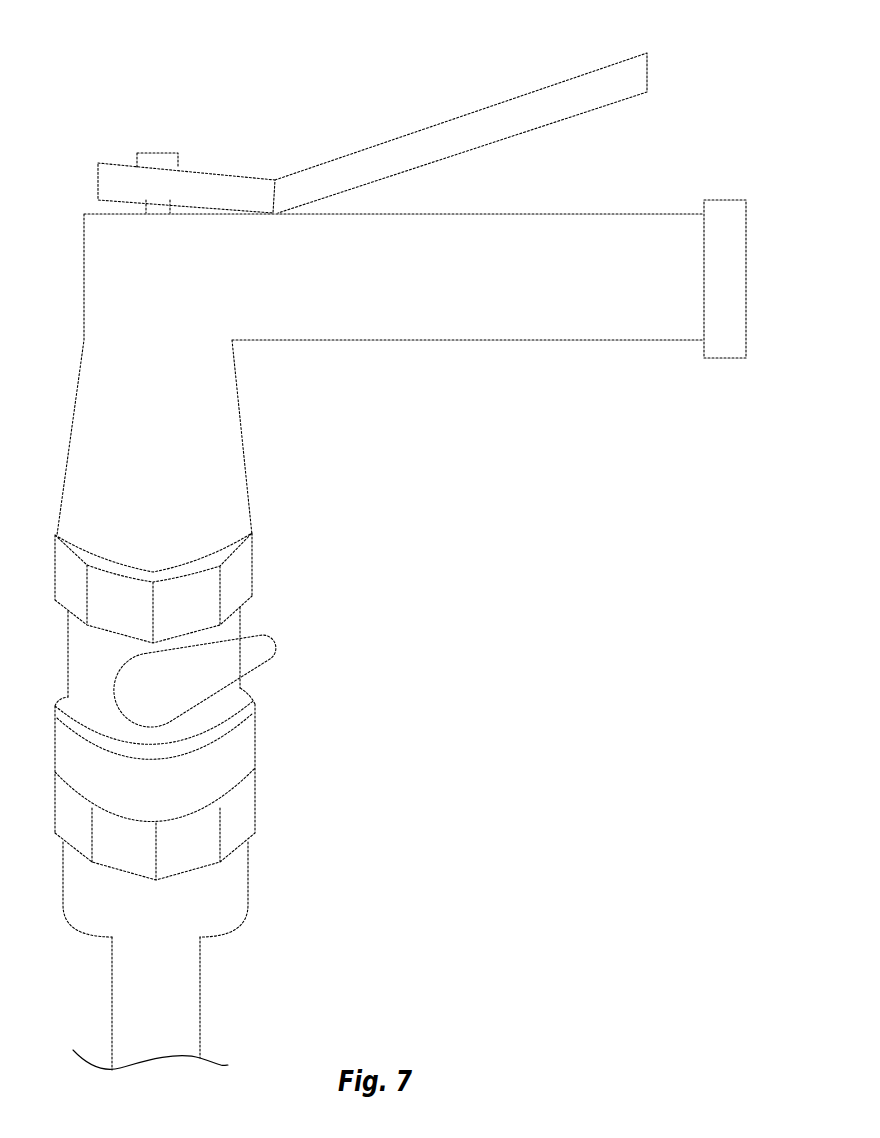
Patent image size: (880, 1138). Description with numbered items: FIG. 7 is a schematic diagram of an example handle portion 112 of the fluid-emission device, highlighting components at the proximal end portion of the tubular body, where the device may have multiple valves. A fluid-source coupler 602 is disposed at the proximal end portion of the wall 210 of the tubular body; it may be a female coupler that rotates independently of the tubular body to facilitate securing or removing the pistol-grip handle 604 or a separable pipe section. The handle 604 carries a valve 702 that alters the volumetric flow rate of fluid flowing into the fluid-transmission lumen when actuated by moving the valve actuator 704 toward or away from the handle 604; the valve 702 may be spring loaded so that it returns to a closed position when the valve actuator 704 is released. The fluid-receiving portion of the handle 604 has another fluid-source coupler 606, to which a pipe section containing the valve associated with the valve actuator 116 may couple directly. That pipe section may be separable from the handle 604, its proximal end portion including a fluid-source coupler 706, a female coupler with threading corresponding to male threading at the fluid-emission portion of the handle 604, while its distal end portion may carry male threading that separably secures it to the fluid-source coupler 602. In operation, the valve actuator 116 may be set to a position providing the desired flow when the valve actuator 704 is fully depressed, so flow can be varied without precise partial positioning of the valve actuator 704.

The handle portion 112 is at (160, 48).
The valve 702 is at (160, 164).
The valve actuator 704 is at (472, 127).
The handle 604 is at (193, 332).
The fluid-source coupler 606 is at (733, 352).
The fluid-source coupler 706 is at (241, 585).
The valve actuator 116 is at (258, 659).
The fluid-source coupler 602 is at (244, 749).
The wall 210 is at (191, 1026).